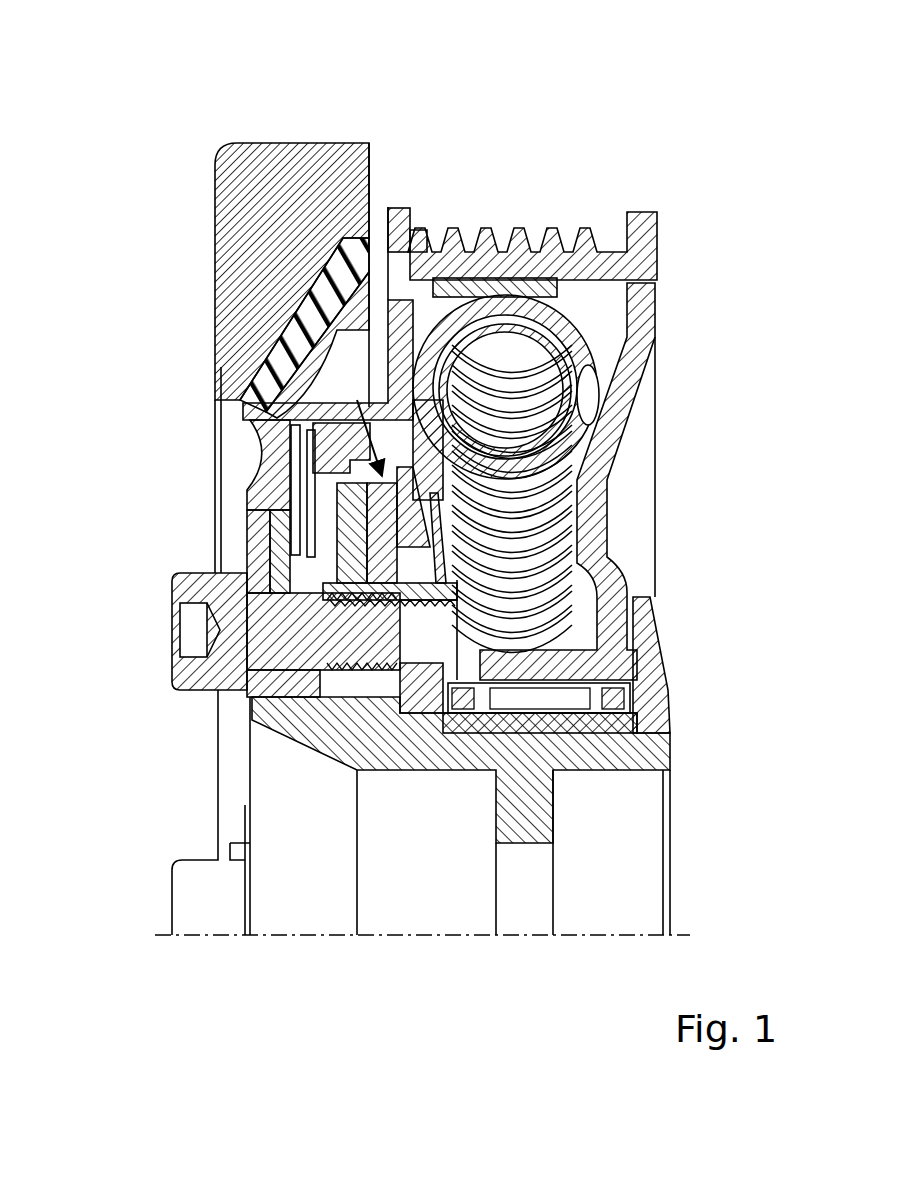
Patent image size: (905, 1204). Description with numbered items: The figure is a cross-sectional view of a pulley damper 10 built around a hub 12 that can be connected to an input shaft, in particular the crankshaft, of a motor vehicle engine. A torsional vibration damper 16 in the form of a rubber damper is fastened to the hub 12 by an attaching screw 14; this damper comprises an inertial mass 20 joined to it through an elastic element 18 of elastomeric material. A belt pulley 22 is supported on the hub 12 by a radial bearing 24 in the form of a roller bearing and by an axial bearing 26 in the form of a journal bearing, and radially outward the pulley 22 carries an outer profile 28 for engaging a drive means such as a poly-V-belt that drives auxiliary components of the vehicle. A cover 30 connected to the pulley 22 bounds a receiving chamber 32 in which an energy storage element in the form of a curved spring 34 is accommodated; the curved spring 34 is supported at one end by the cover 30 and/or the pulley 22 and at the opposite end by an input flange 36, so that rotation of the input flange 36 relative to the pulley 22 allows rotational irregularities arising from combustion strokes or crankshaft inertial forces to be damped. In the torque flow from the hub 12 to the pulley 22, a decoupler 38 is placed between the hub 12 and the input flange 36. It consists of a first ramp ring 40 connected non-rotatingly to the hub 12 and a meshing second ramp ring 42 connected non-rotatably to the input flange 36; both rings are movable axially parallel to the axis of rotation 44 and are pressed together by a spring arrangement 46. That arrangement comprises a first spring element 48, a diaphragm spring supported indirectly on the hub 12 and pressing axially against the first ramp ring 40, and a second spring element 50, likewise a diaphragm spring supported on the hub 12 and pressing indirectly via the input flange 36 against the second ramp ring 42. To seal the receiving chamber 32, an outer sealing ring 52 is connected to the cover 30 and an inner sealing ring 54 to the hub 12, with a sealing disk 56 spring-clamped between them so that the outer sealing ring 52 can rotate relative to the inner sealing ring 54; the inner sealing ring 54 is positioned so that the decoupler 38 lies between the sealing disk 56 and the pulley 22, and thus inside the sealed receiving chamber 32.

The pulley damper 10 is at (625, 98).
The hub 12 is at (622, 750).
The attaching screw 14 is at (243, 650).
The torsional vibration damper 16 is at (195, 220).
The elastic element 18 is at (267, 353).
The inertial mass 20 is at (253, 277).
The belt pulley 22 is at (617, 563).
The radial bearing 24 is at (537, 700).
The axial bearing 26 is at (663, 642).
The outer profile 28 is at (520, 237).
The cover 30 is at (412, 207).
The receiving chamber 32 is at (610, 350).
The curved spring 34 is at (588, 387).
The input flange 36 is at (430, 493).
The decoupler 38 is at (287, 377).
The first ramp ring 40 is at (287, 550).
The second ramp ring 42 is at (287, 485).
The axis of rotation 44 is at (690, 933).
The spring arrangement 46 is at (371, 771).
The first spring element 48 is at (343, 602).
The second spring element 50 is at (442, 590).
The outer sealing ring 52 is at (243, 407).
The inner sealing ring 54 is at (290, 527).
The sealing disk 56 is at (263, 447).